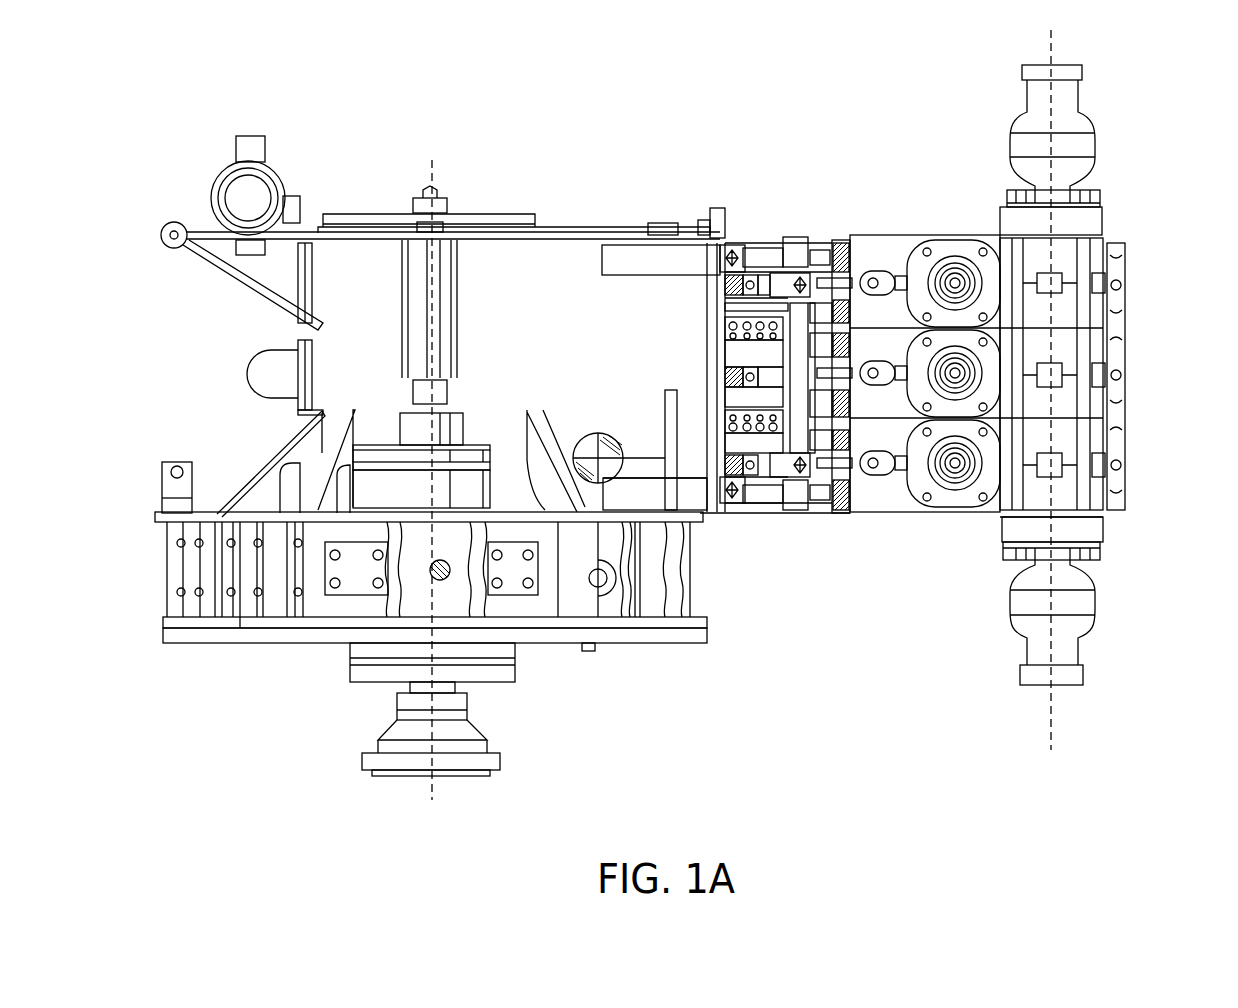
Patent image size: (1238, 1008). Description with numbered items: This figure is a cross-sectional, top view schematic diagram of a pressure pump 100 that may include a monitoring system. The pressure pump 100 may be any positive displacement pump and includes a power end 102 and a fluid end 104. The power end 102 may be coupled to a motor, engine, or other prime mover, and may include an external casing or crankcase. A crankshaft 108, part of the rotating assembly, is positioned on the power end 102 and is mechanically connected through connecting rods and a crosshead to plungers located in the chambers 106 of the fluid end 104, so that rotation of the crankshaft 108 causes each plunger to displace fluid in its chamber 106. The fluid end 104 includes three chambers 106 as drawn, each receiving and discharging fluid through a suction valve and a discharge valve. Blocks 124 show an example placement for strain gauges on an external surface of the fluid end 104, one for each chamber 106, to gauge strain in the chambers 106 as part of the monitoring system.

The pressure pump 100 is at (652, 415).
The power end 102 is at (440, 468).
The fluid end 104 is at (949, 404).
The chambers 106 is at (1125, 473).
The crankshaft 108 is at (447, 277).
The blocks 124 is at (1062, 465).